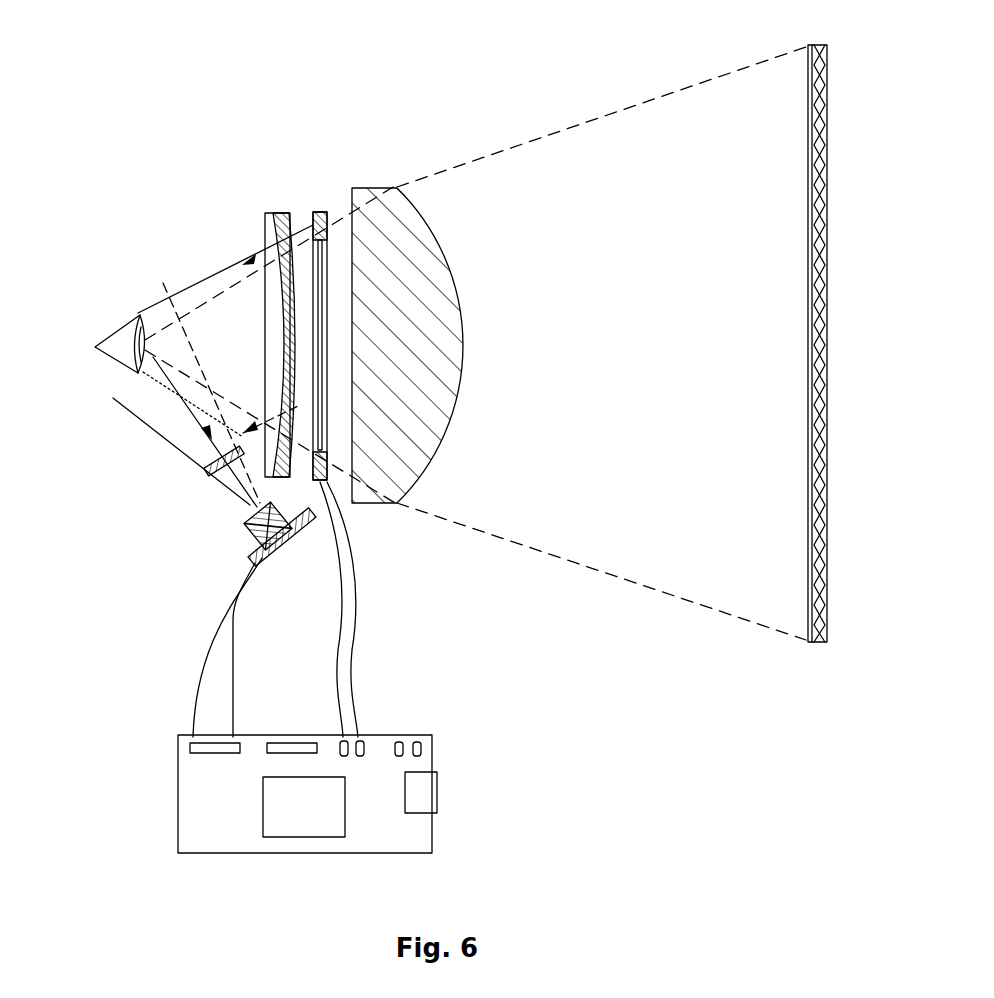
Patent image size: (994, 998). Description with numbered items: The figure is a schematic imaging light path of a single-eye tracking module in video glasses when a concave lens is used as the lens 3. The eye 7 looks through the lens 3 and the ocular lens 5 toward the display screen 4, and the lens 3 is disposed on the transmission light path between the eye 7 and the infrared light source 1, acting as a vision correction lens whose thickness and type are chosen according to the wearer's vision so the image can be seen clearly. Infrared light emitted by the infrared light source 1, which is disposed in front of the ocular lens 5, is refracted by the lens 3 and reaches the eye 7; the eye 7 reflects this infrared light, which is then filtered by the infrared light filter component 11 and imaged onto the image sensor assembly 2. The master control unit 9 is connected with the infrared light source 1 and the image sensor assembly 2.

The infrared light source 1 is at (308, 218).
The image sensor assembly 2 is at (252, 543).
The lens 3 is at (273, 218).
The display screen 4 is at (830, 217).
The ocular lens 5 is at (390, 238).
The eye 7 is at (118, 328).
The master control unit 9 is at (190, 798).
The infrared light filter component 11 is at (210, 472).